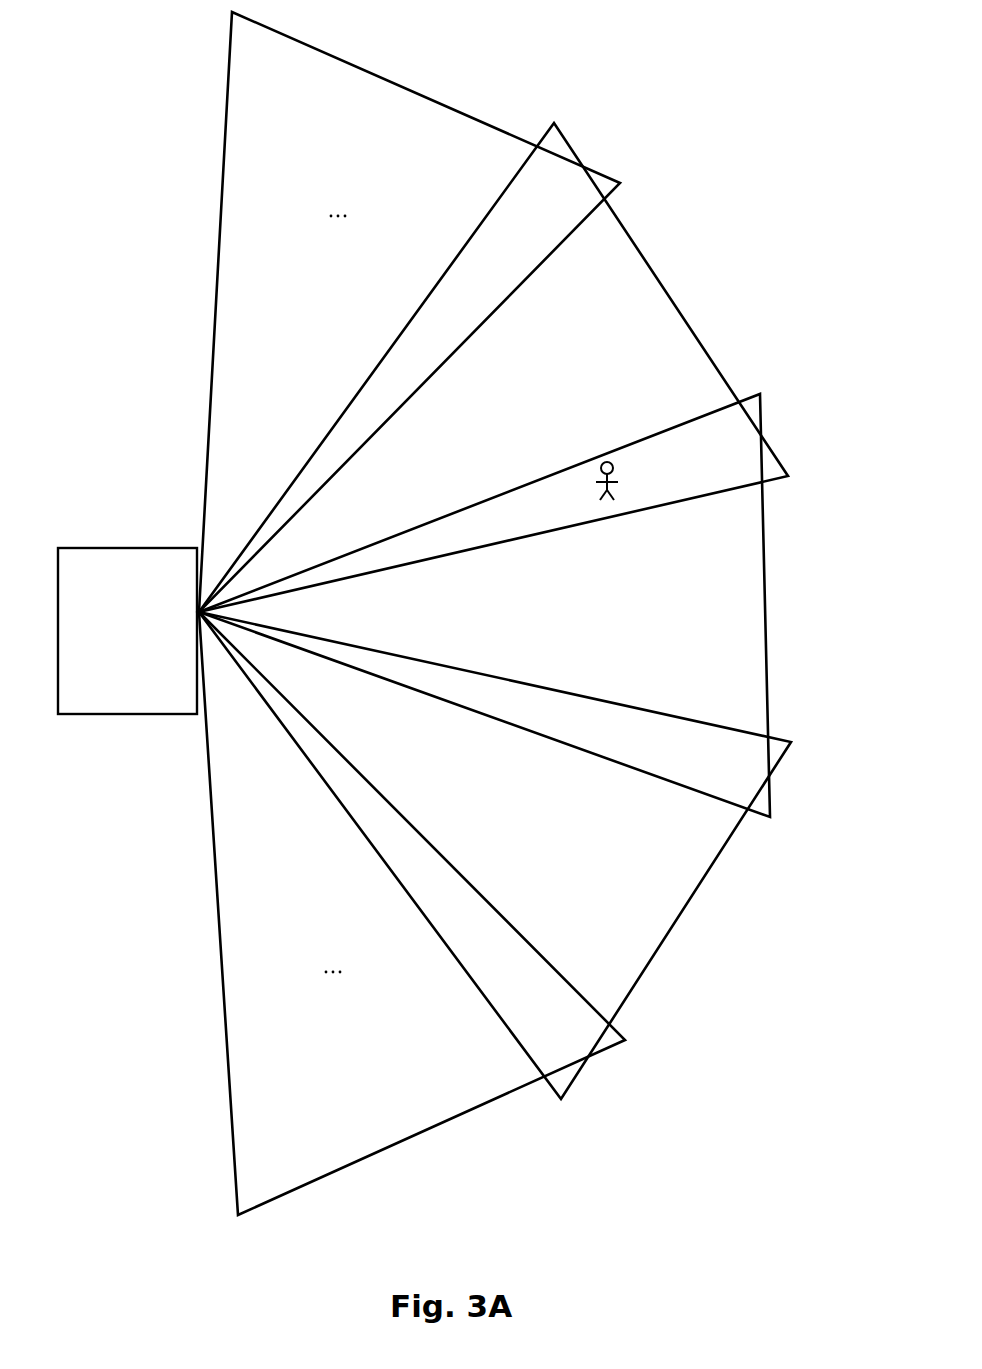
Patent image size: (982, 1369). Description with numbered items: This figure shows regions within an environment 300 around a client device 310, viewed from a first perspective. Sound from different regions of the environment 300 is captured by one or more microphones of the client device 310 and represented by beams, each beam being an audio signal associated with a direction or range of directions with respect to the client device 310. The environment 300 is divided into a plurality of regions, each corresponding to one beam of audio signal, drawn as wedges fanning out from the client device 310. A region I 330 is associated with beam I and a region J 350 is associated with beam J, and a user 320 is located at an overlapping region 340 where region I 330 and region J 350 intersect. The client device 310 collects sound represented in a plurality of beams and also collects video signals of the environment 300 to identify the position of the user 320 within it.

The environment 300 is at (83, 171).
The client device 310 is at (148, 643).
The user 320 is at (607, 462).
The region I 330 is at (672, 290).
The overlapping region 340 is at (748, 450).
The region J 350 is at (735, 593).